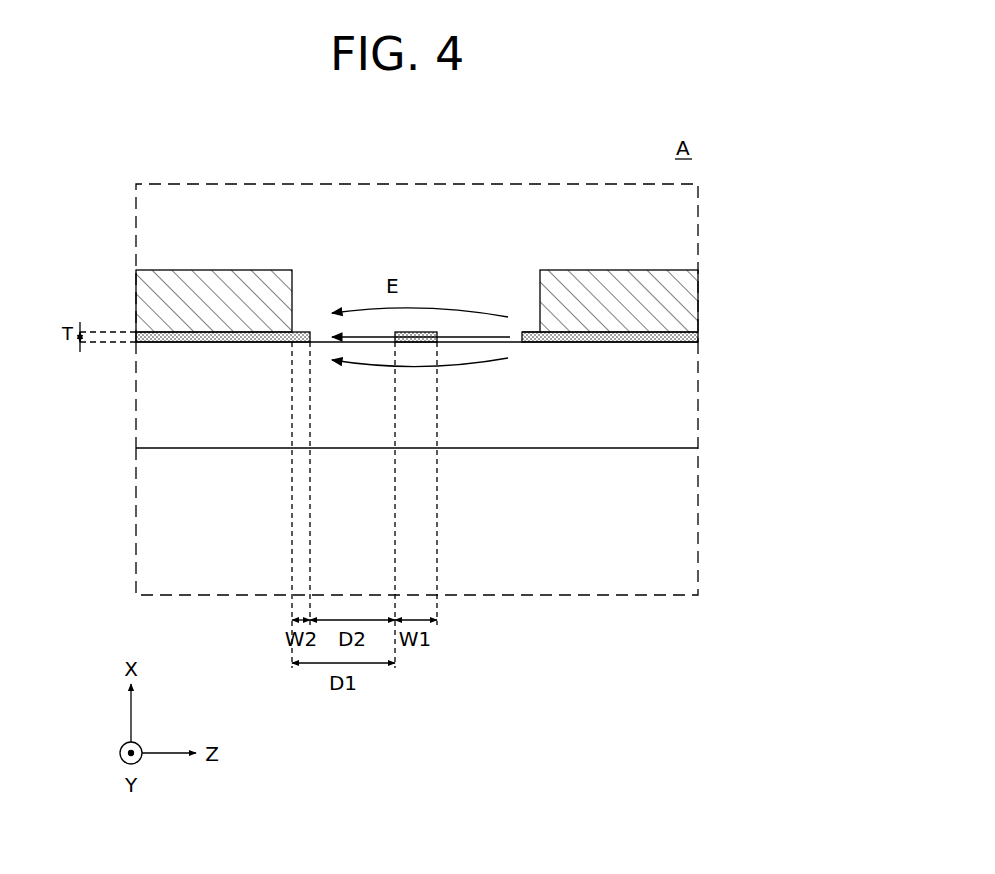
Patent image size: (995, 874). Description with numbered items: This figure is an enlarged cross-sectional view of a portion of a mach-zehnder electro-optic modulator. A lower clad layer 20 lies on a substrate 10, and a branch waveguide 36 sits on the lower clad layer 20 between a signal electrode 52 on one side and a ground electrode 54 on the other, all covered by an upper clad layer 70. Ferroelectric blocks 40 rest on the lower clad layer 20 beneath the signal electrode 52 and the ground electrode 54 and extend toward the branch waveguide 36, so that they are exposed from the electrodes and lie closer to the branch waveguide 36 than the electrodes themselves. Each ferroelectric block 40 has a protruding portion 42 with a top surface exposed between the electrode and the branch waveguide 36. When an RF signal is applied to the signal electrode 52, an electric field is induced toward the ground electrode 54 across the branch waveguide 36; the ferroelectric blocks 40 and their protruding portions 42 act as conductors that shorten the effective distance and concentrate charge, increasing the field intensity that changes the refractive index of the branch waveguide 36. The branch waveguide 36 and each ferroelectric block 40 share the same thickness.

The substrate 10 is at (683, 545).
The lower clad layer 20 is at (683, 405).
The branch waveguide 36 is at (423, 332).
The ferroelectric block 40 is at (698, 333).
The protruding portion 42 is at (533, 330).
The signal electrode 52 is at (685, 298).
The ground electrode 54 is at (147, 290).
The upper clad layer 70 is at (685, 238).